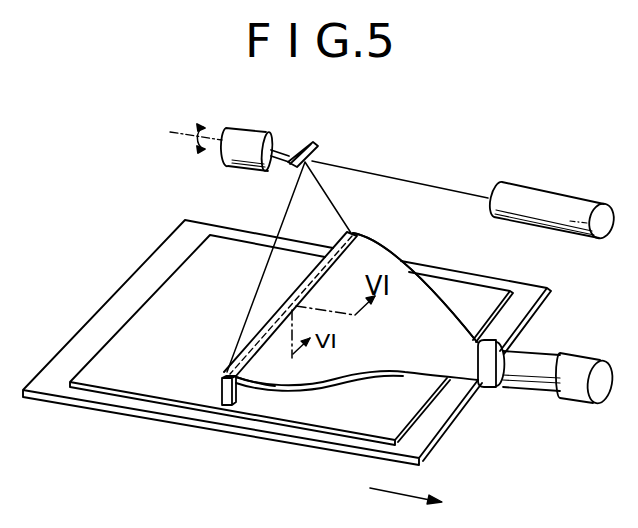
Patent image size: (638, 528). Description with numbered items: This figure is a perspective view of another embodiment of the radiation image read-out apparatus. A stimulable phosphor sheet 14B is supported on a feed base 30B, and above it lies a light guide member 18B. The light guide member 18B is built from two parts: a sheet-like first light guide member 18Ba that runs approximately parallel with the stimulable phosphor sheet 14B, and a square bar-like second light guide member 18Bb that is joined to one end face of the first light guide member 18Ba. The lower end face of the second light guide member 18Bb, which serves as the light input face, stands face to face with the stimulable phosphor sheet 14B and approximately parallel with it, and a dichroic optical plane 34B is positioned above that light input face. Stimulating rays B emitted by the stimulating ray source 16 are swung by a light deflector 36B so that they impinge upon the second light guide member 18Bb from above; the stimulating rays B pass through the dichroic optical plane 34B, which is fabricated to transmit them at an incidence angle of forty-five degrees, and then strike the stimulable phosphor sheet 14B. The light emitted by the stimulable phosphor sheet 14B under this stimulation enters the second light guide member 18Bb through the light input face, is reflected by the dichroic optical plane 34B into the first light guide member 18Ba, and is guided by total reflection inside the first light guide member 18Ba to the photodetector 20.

The light deflector 36B is at (287, 137).
The stimulating rays B is at (410, 180).
The stimulating ray source 16 is at (556, 190).
The light guide member 18B is at (427, 287).
The first light guide member 18Ba is at (440, 308).
The second light guide member 18Bb is at (218, 397).
The dichroic optical plane 34B is at (221, 382).
The feed base 30B is at (260, 437).
The stimulable phosphor sheet 14B is at (330, 415).
The photodetector 20 is at (532, 386).